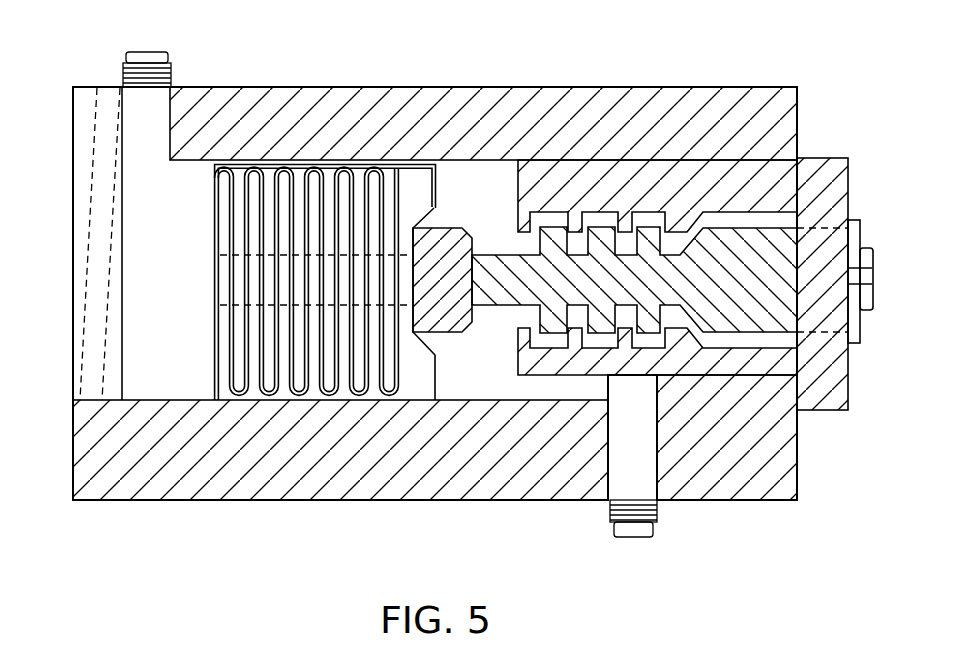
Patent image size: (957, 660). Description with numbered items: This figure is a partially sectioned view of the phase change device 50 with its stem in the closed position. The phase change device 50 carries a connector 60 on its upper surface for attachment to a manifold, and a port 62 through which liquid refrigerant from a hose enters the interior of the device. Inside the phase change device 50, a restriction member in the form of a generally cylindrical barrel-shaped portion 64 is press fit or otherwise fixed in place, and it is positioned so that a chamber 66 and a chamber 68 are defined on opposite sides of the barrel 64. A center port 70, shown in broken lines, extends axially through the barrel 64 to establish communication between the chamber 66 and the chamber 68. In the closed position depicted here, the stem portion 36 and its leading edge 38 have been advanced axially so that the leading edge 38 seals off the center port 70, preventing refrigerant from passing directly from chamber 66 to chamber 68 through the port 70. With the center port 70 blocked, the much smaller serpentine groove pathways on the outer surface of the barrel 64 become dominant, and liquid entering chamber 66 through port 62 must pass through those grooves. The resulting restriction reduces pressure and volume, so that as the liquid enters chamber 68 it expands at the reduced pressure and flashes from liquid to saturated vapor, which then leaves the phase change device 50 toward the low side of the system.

The stem portion 36 is at (515, 306).
The leading edge 38 is at (453, 332).
The phase change device 50 is at (777, 525).
The connector 60 is at (123, 70).
The port 62 is at (658, 513).
The barrel-shaped portion 64 is at (216, 222).
The chamber 66 is at (497, 378).
The chamber 68 is at (158, 362).
The center port 70 is at (216, 285).